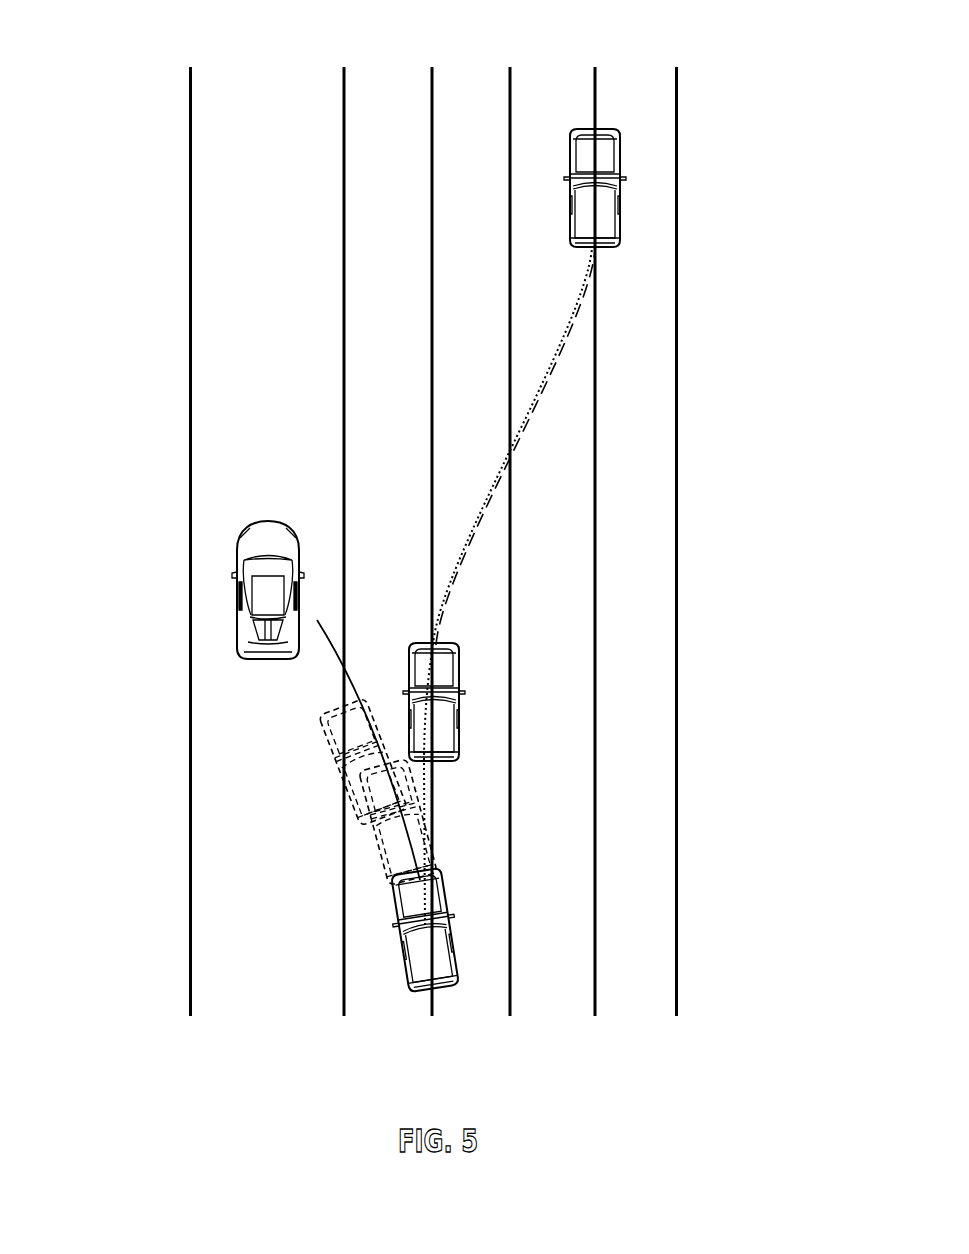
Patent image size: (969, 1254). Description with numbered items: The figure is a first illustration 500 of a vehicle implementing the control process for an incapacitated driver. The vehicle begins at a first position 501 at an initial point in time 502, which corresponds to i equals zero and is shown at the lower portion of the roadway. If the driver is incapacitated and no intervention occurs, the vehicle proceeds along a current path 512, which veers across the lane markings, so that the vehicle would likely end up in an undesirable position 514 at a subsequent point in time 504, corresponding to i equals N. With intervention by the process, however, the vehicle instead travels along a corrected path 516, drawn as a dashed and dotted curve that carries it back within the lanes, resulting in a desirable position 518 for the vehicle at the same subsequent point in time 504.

The first illustration 500 is at (137, 56).
The first position 501 is at (418, 985).
The initial point in time 502 is at (790, 909).
The subsequent point in time 504 is at (790, 546).
The current path 512 is at (328, 636).
The undesirable position 514 is at (278, 540).
The corrected path 516 is at (560, 367).
The desirable position 518 is at (603, 198).